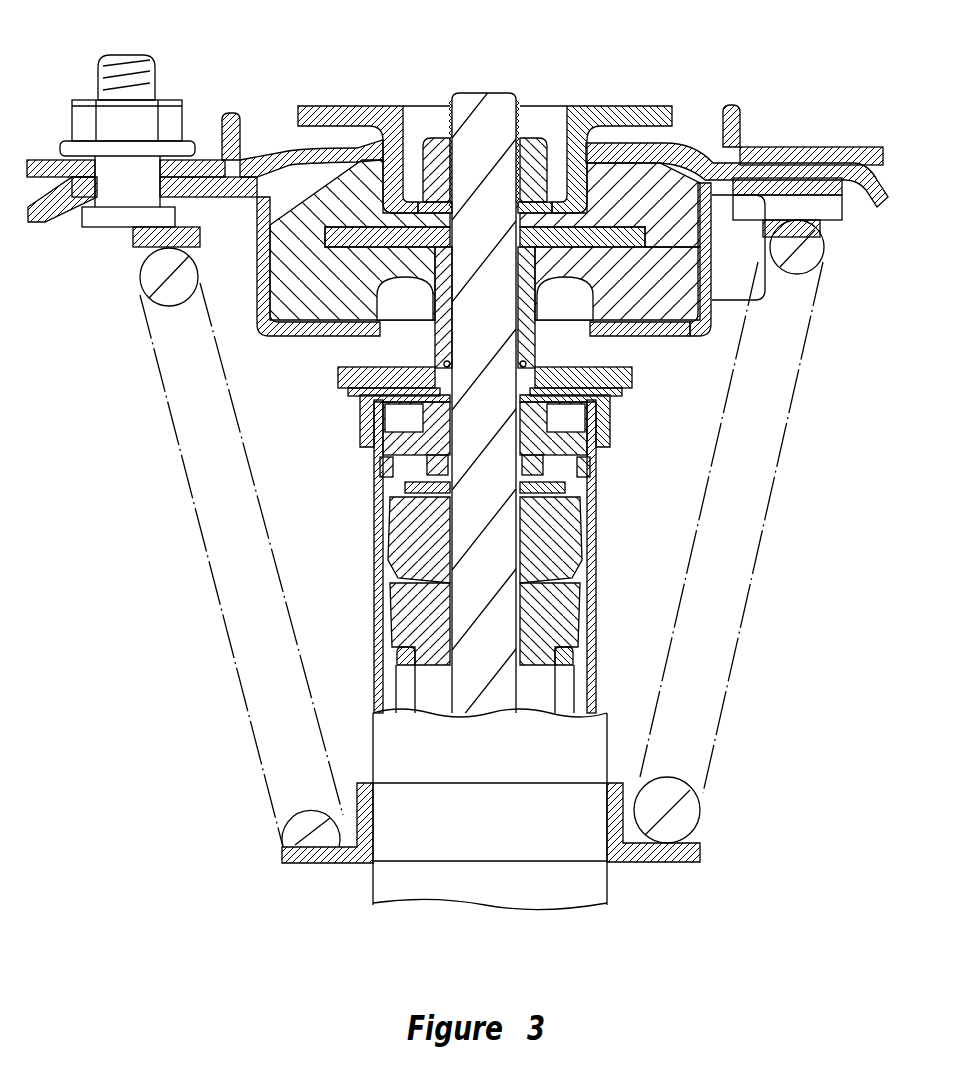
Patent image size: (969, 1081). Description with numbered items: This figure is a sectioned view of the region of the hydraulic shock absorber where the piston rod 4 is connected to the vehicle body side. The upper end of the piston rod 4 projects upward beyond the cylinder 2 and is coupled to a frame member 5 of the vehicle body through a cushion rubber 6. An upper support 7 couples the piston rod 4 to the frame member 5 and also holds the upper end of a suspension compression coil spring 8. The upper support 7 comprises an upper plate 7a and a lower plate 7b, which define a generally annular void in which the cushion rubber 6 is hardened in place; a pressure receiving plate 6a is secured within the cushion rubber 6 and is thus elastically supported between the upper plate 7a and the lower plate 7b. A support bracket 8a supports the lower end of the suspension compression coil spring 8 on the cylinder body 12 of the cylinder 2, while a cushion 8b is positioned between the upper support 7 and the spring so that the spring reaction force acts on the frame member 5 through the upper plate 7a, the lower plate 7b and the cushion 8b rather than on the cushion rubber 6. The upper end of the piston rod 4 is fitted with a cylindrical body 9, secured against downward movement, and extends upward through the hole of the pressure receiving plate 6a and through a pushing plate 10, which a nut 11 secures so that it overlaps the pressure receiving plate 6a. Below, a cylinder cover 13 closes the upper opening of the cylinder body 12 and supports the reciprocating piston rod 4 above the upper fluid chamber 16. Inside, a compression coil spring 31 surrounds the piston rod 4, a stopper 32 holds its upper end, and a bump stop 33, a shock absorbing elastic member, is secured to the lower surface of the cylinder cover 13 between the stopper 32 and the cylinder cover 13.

The cylinder 2 is at (366, 503).
The piston rod 4 is at (484, 97).
The frame member 5 is at (204, 158).
The cushion rubber 6 is at (682, 268).
The pressure receiving plate 6a is at (622, 230).
The upper support 7 is at (716, 321).
The upper plate 7a is at (690, 160).
The lower plate 7b is at (683, 330).
The suspension compression coil spring 8 is at (147, 275).
The support bracket 8a is at (285, 852).
The cushion 8b is at (824, 207).
The cylindrical body 9 is at (440, 352).
The pushing plate 10 is at (371, 118).
The nut 11 is at (432, 138).
The cylinder body 12 is at (378, 572).
The cylinder cover 13 is at (612, 450).
The upper fluid chamber 16 is at (392, 686).
The compression coil spring 31 is at (575, 653).
The stopper 32 is at (590, 615).
The bump stop 33 is at (592, 562).